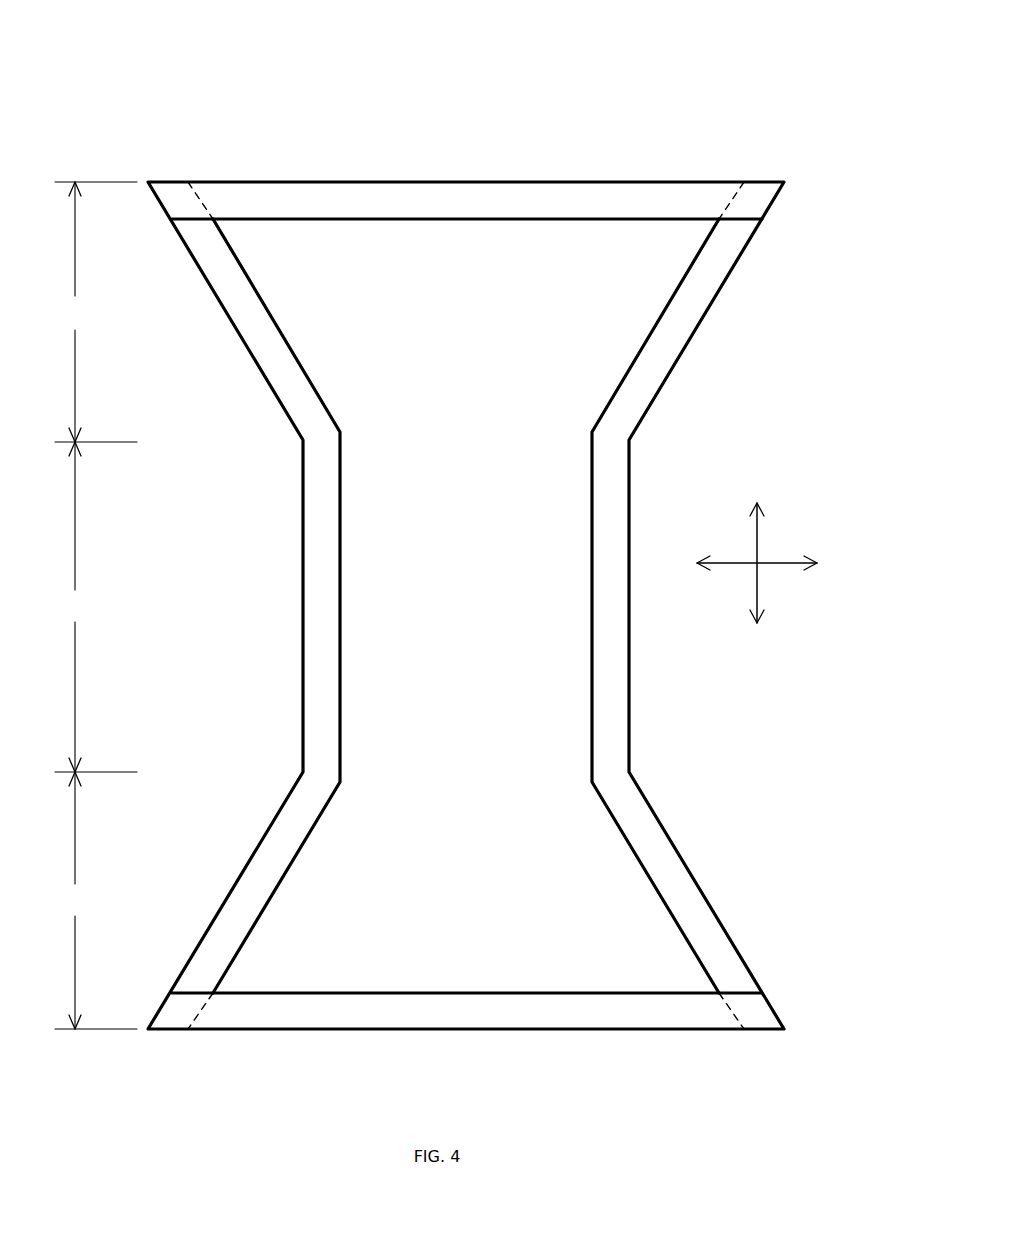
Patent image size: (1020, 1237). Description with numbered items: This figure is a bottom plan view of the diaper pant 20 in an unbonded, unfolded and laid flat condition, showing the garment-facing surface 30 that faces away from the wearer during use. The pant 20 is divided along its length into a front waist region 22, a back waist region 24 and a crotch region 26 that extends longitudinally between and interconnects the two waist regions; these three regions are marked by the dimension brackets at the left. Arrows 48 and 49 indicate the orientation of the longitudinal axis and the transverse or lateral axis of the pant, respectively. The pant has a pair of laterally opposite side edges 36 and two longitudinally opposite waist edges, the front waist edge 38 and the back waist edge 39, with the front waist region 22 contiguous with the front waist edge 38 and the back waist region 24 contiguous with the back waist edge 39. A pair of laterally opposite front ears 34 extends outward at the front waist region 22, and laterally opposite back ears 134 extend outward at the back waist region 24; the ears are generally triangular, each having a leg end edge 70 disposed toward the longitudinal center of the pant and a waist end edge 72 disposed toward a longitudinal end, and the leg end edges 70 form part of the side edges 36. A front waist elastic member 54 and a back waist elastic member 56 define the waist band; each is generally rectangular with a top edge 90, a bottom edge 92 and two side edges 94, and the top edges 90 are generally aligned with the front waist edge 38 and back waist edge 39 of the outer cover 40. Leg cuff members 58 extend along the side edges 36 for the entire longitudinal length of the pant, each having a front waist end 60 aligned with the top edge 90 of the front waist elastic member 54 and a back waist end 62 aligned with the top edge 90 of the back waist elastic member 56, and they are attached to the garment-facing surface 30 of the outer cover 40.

The diaper pant 20 is at (622, 97).
The front waist region 22 is at (96, 312).
The back waist region 24 is at (96, 893).
The crotch region 26 is at (96, 600).
The garment-facing surface 30 is at (472, 600).
The front ears 34 is at (290, 242).
The side edges 36 is at (303, 632).
The front waist edge 38 is at (376, 182).
The back waist edge 39 is at (376, 1029).
The outer cover 40 is at (540, 715).
The longitudinal axis arrow 48 is at (757, 535).
The lateral axis arrow 49 is at (780, 564).
The front waist elastic member 54 is at (455, 205).
The back waist elastic member 56 is at (455, 1010).
The leg cuff members 58 is at (312, 478).
The front waist end 60 is at (178, 196).
The back waist end 62 is at (178, 1017).
The leg end edge 70 is at (243, 342).
The waist end edge 72 is at (216, 182).
The top edge 90 is at (255, 182).
The bottom edge 92 is at (387, 219).
The side edges 94 is at (158, 199).
The back ears 134 is at (290, 971).